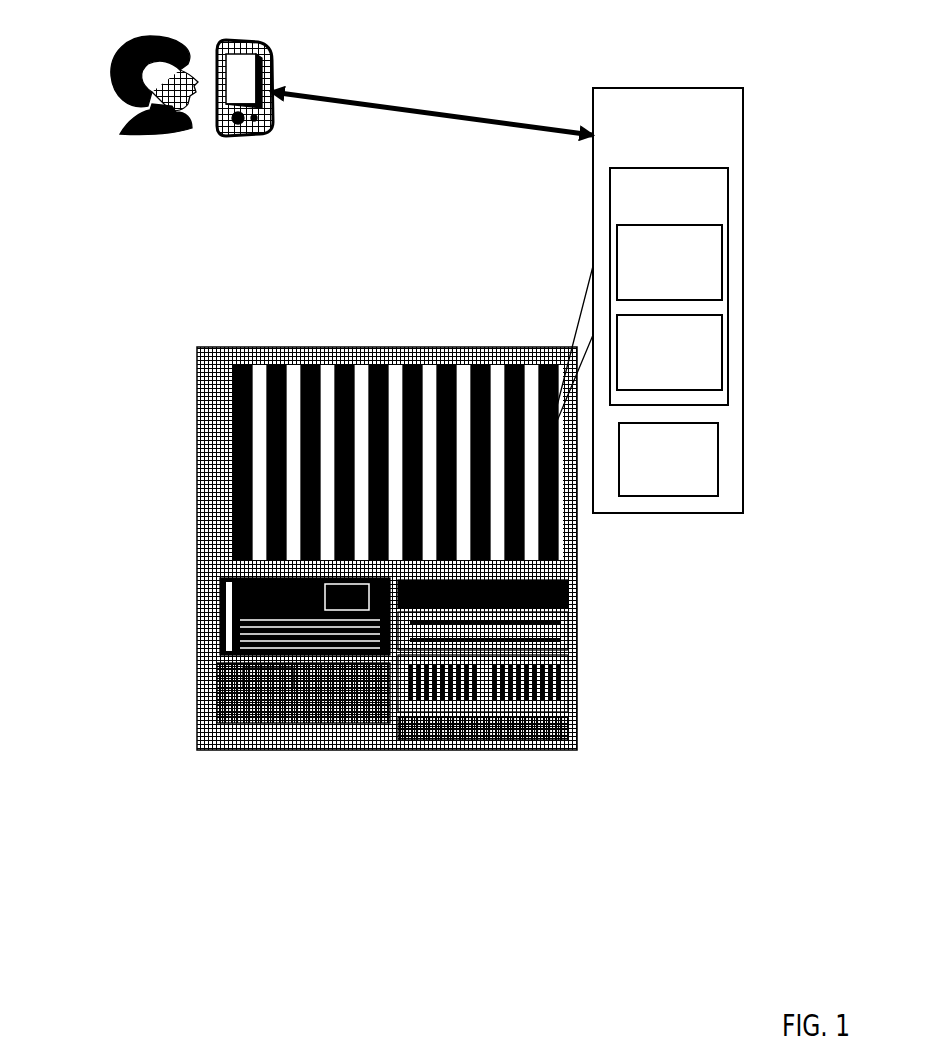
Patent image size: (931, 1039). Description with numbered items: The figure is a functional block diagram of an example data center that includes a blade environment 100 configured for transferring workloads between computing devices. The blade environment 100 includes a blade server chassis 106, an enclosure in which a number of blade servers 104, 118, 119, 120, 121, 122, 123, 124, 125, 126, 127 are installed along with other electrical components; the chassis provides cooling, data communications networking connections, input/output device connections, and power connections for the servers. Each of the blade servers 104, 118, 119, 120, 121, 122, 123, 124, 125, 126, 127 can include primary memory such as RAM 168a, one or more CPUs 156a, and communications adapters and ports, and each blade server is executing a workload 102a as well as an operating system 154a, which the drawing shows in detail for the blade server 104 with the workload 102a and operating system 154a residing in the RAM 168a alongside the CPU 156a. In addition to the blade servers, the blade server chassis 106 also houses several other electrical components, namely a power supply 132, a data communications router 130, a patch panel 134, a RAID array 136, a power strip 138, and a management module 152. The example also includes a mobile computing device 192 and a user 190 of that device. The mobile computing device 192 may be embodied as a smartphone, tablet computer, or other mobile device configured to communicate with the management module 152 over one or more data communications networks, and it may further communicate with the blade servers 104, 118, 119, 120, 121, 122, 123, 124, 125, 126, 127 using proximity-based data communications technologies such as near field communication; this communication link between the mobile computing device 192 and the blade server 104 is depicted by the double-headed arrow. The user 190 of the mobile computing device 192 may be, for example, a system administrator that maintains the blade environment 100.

The blade environment 100 is at (320, 767).
The blade server 104 is at (683, 146).
The blade server chassis 106 is at (197, 388).
The blade server 118 is at (549, 362).
The blade server 119 is at (515, 362).
The blade server 120 is at (481, 362).
The blade server 121 is at (447, 362).
The blade server 122 is at (413, 362).
The blade server 123 is at (379, 362).
The blade server 124 is at (345, 362).
The blade server 125 is at (311, 362).
The blade server 126 is at (277, 362).
The blade server 127 is at (243, 362).
The data communications router 130 is at (196, 705).
The power supply 132 is at (196, 608).
The patch panel 134 is at (584, 635).
The RAID array 136 is at (584, 685).
The power strip 138 is at (584, 727).
The management module 152 is at (584, 595).
The operating system 154a is at (690, 375).
The CPU 156a is at (690, 483).
The RAM 168a is at (711, 205).
The workload 102a is at (690, 285).
The user 190 is at (86, 108).
The mobile computing device 192 is at (326, 73).